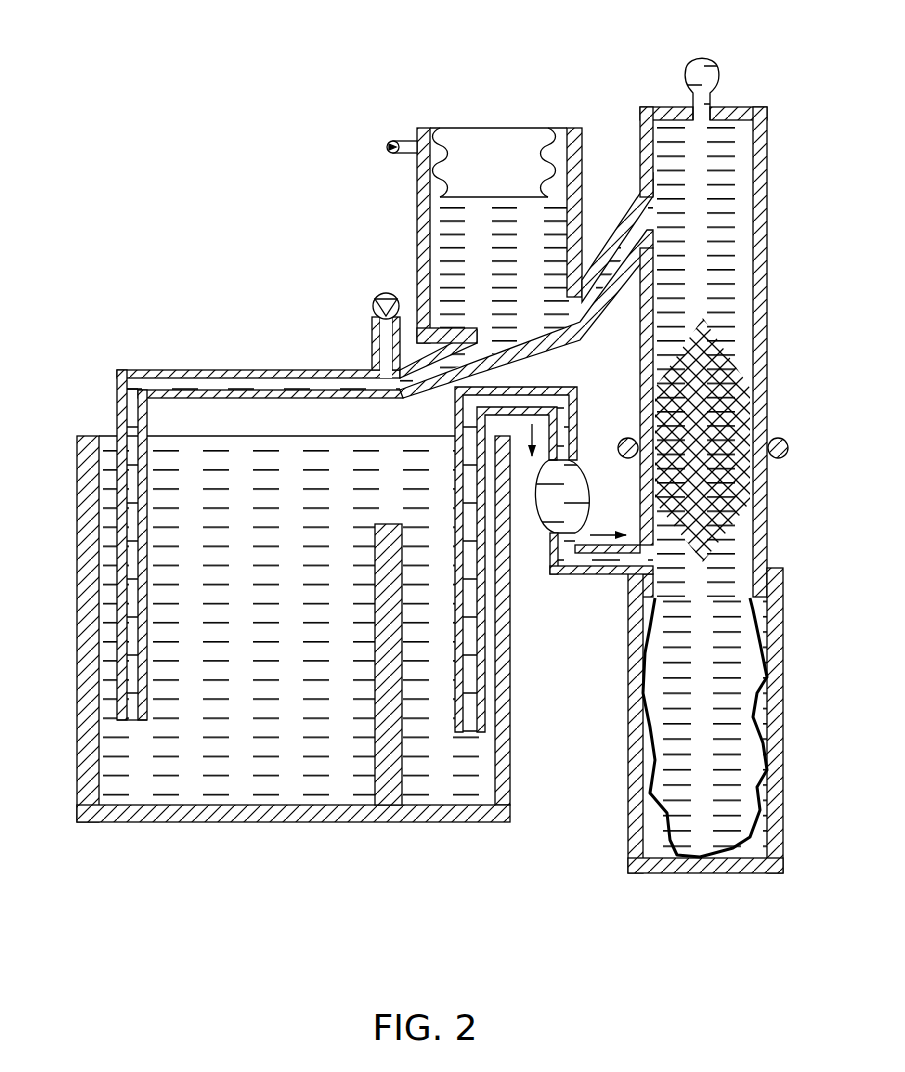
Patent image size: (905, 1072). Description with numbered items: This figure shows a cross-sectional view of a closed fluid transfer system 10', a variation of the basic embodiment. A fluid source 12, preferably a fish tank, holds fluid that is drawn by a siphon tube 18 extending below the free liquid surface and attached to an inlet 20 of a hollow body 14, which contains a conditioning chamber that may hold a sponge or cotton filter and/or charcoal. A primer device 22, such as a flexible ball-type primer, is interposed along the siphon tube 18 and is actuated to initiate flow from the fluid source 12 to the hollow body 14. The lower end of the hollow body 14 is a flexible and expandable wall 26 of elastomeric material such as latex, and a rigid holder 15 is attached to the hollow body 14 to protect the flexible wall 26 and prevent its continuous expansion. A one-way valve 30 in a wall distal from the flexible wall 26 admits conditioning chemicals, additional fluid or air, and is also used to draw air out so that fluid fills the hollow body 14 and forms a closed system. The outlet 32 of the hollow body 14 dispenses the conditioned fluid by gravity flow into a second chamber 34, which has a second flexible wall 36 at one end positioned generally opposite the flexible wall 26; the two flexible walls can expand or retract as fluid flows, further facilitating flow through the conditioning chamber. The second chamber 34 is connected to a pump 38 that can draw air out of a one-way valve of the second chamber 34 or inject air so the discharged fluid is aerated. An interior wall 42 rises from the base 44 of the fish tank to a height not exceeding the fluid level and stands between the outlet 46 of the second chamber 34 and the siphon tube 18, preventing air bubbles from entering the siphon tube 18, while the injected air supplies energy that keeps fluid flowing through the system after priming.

The liquid dispensing apparatus 10' is at (50, 294).
The fluid source 12 is at (75, 576).
The hollow body 14 is at (767, 255).
The rigid holder 15 is at (784, 667).
The siphon tube 18 is at (577, 413).
The inlet 20 is at (784, 404).
The primer device 22 is at (537, 490).
The flexible wall 26 is at (760, 755).
The one-way valve 30 is at (713, 64).
The outlet 32 is at (637, 192).
The second chamber 34 is at (417, 218).
The flexible wall 36 is at (549, 130).
The pump 38 is at (379, 131).
The interior wall 42 is at (372, 311).
The base 44 is at (285, 818).
The outlet 46 is at (262, 372).